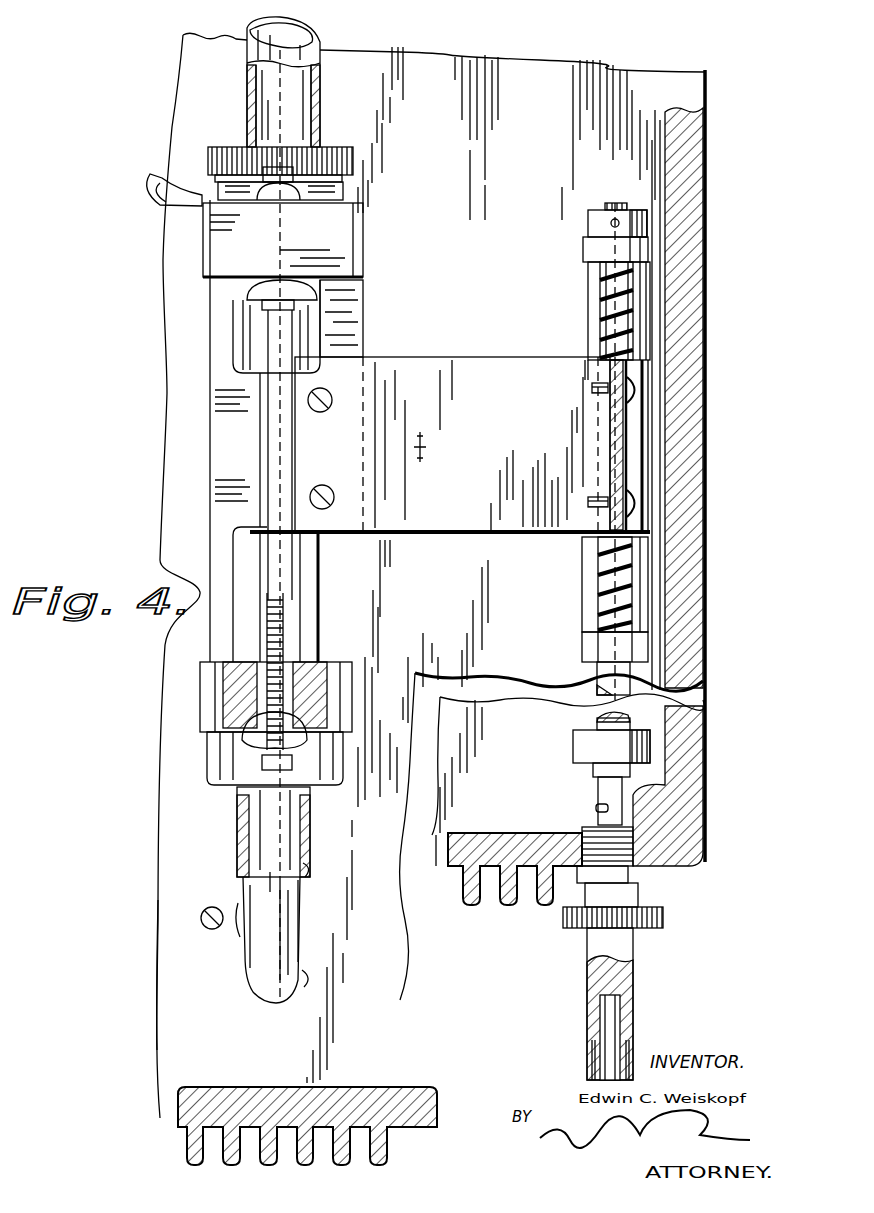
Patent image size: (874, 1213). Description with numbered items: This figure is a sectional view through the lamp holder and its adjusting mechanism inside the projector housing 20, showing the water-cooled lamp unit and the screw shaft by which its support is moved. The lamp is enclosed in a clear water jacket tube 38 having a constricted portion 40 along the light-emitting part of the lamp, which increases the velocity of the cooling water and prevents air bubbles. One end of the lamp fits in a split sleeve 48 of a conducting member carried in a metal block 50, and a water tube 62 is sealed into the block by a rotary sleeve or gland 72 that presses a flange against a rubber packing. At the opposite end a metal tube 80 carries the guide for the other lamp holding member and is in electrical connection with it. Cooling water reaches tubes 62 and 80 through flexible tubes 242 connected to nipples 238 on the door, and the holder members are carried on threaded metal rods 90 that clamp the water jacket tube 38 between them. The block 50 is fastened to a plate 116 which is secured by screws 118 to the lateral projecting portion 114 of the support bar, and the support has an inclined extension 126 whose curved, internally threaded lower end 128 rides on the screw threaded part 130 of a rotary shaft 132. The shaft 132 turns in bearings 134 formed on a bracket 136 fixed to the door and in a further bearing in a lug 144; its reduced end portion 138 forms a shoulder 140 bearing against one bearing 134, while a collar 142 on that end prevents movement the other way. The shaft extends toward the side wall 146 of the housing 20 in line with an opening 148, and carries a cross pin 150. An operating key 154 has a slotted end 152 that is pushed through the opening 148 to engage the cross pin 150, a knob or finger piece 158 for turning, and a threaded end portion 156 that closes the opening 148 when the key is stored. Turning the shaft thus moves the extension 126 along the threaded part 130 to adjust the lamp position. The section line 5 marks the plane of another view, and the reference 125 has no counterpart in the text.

The flexible tubes 242 is at (318, 50).
The water tube 62 is at (268, 97).
The section line 5— 5 is at (278, 119).
The rotary sleeve or gland 72 is at (210, 160).
The metal block 50 is at (217, 243).
The water jacket tube 38 is at (232, 330).
The constricted portion 40 is at (247, 443).
The metal rods 90 is at (277, 543).
The split sleeve 48 is at (218, 705).
The metal tube 80 is at (268, 822).
The nipples 238 is at (238, 932).
The side wall 125 is at (180, 955).
The plate 116 is at (352, 333).
The screws 118 is at (330, 412).
The extension 126 is at (476, 357).
The lateral projecting portion 114 is at (410, 535).
The collar 142 is at (648, 226).
The shoulder 140 is at (588, 258).
The reduced end portion 138 is at (693, 248).
The bearings 134 is at (652, 285).
The screw threaded part 130 is at (603, 330).
The lower end 128 is at (652, 455).
The bracket 136 is at (655, 573).
The rotary shaft 132 is at (628, 716).
The lug 144 is at (652, 752).
The cross pin 150 is at (597, 808).
The opening 148 is at (592, 828).
The threaded end portion 156 is at (650, 851).
The housing 20 is at (440, 872).
The side wall 146 is at (505, 856).
The knob or finger piece 158 is at (665, 918).
The operating key 154 is at (640, 975).
The slotted end 152 is at (635, 1050).